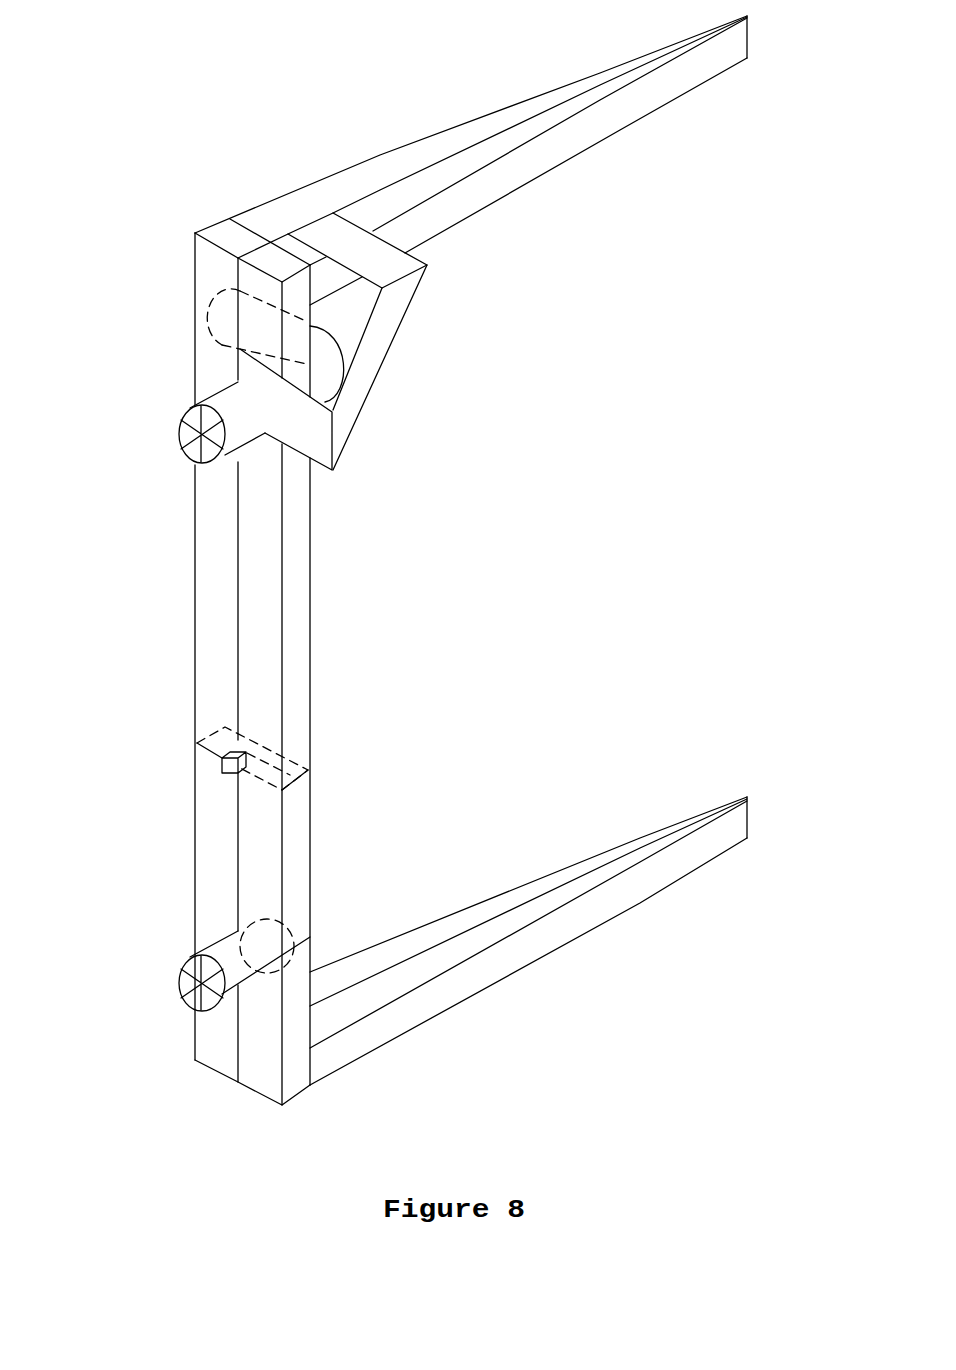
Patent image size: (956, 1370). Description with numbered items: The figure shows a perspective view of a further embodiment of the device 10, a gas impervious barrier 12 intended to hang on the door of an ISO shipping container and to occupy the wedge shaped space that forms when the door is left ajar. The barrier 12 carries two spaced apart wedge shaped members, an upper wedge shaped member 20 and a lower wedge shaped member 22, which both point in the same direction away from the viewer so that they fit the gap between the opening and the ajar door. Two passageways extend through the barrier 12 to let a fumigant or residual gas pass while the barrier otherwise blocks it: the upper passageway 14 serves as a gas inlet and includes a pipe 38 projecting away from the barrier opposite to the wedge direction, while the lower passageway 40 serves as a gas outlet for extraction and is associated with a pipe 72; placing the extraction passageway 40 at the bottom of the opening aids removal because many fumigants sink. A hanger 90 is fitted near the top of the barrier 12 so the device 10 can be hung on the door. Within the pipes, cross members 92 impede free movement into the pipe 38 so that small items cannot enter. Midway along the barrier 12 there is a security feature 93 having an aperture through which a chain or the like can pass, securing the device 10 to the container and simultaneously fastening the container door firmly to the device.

The device 10 is at (197, 167).
The gas impervious barrier 12 is at (220, 605).
The passageway 14 is at (240, 349).
The wedge shaped member 20 is at (393, 165).
The wedge shaped member 22 is at (535, 945).
The pipe 38 is at (215, 398).
The passageway 40 is at (267, 938).
The pipe 72 is at (213, 943).
The hanger 90 is at (392, 315).
The cross members 92 is at (198, 440).
The security feature 93 is at (222, 770).